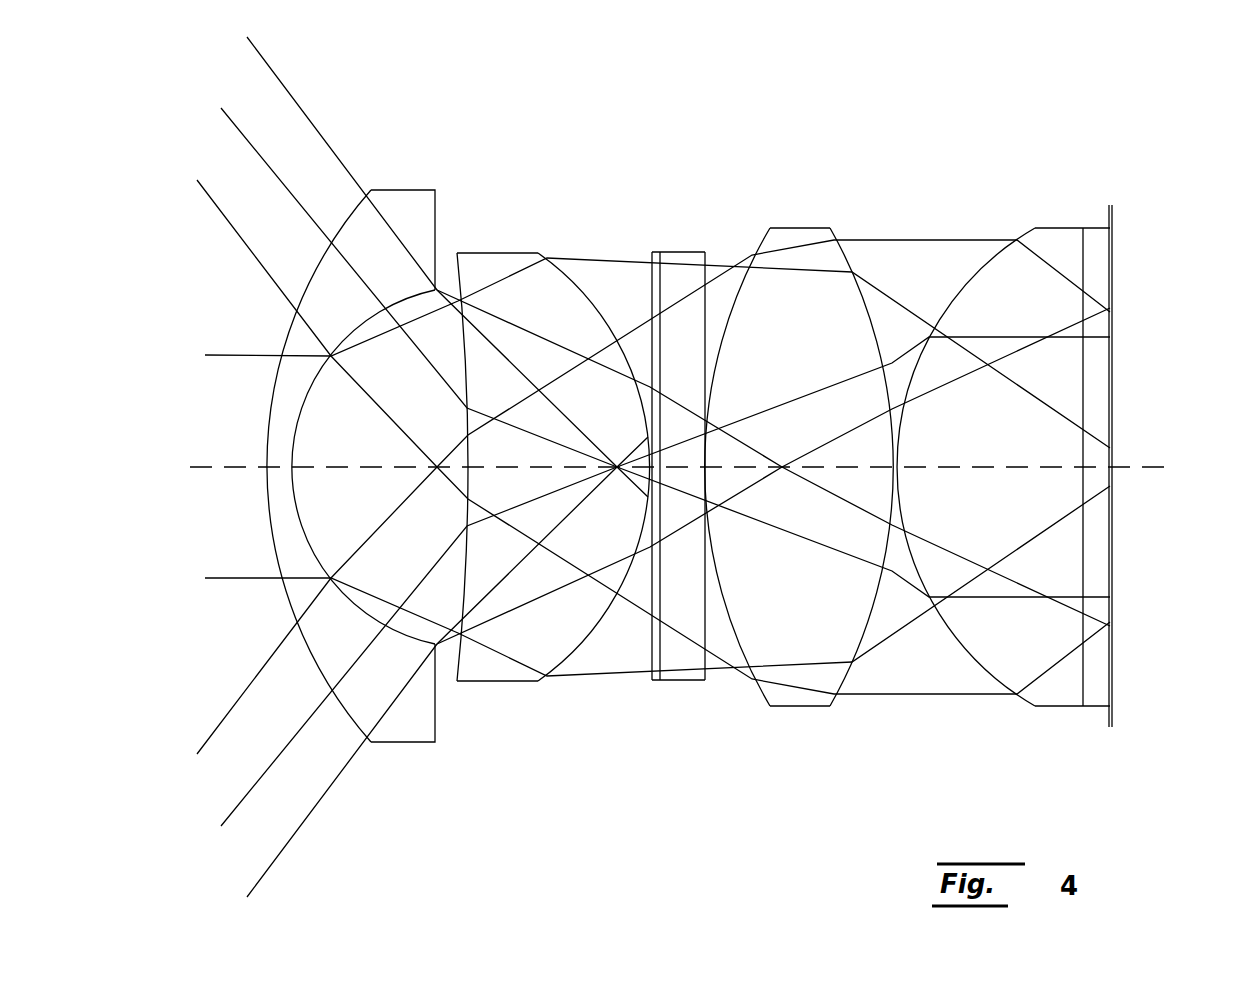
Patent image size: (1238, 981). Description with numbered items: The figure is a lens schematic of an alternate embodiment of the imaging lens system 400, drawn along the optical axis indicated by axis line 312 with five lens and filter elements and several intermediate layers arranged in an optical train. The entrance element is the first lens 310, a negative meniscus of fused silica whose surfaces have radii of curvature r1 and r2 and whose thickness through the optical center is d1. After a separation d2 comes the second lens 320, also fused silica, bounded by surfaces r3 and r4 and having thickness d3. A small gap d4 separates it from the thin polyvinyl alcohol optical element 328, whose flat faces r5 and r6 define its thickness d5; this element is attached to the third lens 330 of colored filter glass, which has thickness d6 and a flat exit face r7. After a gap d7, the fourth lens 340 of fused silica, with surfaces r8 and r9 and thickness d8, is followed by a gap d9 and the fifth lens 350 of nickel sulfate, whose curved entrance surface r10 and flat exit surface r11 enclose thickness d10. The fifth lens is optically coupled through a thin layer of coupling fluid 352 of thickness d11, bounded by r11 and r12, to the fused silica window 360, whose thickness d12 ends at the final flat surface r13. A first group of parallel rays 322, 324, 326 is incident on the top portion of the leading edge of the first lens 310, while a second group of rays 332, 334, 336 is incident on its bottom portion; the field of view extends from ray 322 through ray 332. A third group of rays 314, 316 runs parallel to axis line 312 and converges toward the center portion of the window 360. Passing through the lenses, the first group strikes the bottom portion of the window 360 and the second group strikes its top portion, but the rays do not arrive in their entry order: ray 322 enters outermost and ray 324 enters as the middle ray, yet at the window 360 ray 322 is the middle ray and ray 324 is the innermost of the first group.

The lens system 400 is at (965, 135).
The first lens 310 is at (414, 190).
The second lens 320 is at (496, 253).
The optical element 328 is at (648, 284).
The third lens 330 is at (719, 244).
The fourth lens 340 is at (798, 228).
The fifth lens 350 is at (1048, 228).
The coupling fluid 352 is at (1084, 226).
The window 360 is at (1100, 260).
The axis line 312 is at (212, 466).
The optical ray 314 is at (238, 355).
The optical ray 316 is at (234, 578).
The optical ray 322 is at (322, 121).
The optical ray 324 is at (291, 178).
The optical ray 326 is at (266, 251).
The optical ray 332 is at (274, 872).
The optical ray 334 is at (258, 782).
The optical ray 336 is at (238, 702).
The radius of curvature r1 is at (366, 740).
The radius of curvature r2 is at (400, 631).
The radius of curvature r3 is at (458, 681).
The radius of curvature r4 is at (538, 684).
The radius of curvature r5 is at (652, 682).
The radius of curvature r6 is at (663, 682).
The radius of curvature r7 is at (705, 683).
The radius of curvature r8 is at (770, 708).
The radius of curvature r9 is at (830, 708).
The radius of curvature r10 is at (1037, 706).
The radius of curvature r11 is at (1083, 706).
The radius of curvature r12 is at (1108, 702).
The radius of curvature r13 is at (1113, 680).
The distance d1 is at (278, 462).
The distance d2 is at (362, 465).
The distance d3 is at (525, 466).
The distance d4 is at (652, 262).
The distance d5 is at (660, 252).
The distance d6 is at (683, 465).
The distance d7 is at (706, 465).
The distance d8 is at (832, 466).
The distance d9 is at (898, 466).
The distance d10 is at (975, 466).
The distance d11 is at (1085, 470).
The distance d12 is at (1112, 462).